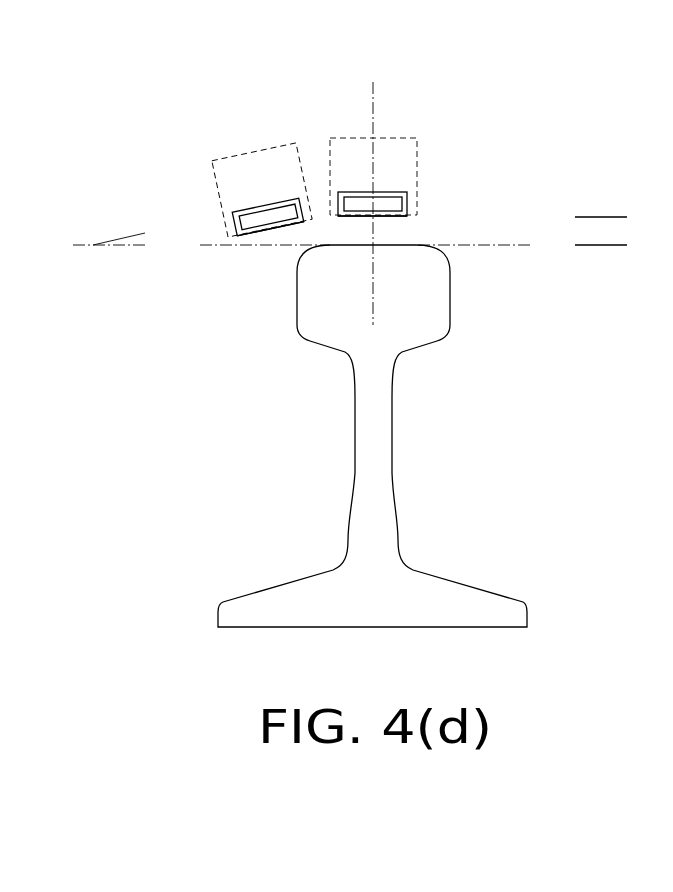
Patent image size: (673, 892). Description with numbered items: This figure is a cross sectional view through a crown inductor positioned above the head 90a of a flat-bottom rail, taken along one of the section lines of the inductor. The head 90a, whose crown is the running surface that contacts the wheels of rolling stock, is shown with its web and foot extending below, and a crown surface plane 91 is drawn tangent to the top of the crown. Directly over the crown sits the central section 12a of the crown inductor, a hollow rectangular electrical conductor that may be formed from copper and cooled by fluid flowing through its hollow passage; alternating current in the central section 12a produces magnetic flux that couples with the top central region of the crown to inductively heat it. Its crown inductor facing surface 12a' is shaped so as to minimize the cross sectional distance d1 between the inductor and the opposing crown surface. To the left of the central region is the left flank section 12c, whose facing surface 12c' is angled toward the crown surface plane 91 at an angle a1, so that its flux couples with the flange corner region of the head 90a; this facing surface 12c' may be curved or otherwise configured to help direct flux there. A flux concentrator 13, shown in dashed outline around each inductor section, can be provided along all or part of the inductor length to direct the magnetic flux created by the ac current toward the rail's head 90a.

The flux concentrator 13 is at (268, 163).
The central section 12a is at (423, 184).
The crown inductor facing surface 12a' is at (428, 214).
The left flank section 12c is at (221, 207).
The facing surface 12c' is at (239, 255).
The head 90a is at (336, 293).
The crown surface plane 91 is at (497, 247).
The angle a1 is at (127, 256).
The cross sectional distance d1 is at (600, 293).